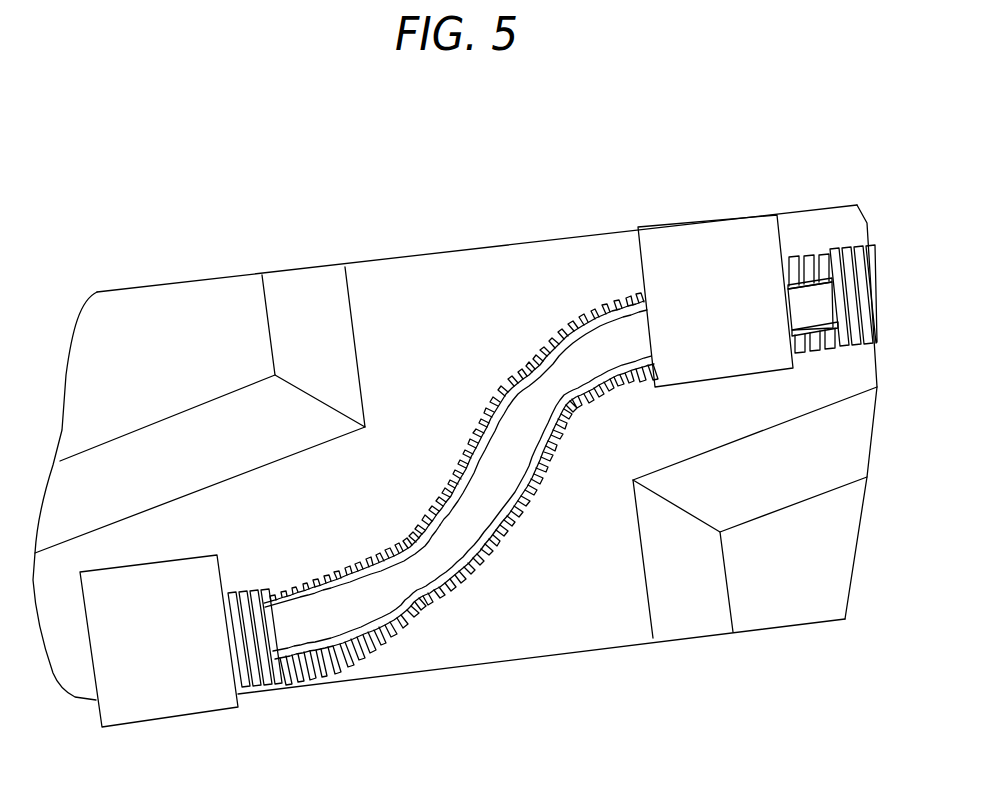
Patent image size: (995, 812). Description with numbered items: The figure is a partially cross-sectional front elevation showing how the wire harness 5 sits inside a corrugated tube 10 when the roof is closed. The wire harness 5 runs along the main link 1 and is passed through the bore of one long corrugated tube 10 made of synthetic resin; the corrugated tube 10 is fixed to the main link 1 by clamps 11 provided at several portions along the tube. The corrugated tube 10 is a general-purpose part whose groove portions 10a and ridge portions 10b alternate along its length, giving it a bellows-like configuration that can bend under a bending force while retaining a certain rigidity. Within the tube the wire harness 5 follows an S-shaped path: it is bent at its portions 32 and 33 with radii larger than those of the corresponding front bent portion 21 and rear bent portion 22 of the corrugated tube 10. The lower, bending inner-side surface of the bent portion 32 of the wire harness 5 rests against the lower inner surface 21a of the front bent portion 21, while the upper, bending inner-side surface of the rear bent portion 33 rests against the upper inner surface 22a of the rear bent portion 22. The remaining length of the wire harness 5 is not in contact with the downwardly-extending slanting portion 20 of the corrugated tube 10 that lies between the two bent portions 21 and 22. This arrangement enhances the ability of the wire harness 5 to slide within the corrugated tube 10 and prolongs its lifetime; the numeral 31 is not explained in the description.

The main link 1 is at (592, 655).
The wire harness 5 is at (627, 288).
The corrugated tube 10 is at (484, 376).
The groove portions 10a is at (550, 320).
The ridge portions 10b is at (553, 317).
The clamps 11 is at (707, 270).
The downwardly-extending portion 20 is at (523, 533).
The front bent portion 21 is at (592, 293).
The lower inner surface 21a is at (567, 417).
The rear bent portion 22 is at (463, 597).
The upper inner surface 22a is at (420, 517).
The first rack end portion 31 is at (627, 358).
The bent portion of wire harness 32 is at (625, 365).
The rear bent portion of wire harness 33 is at (437, 560).